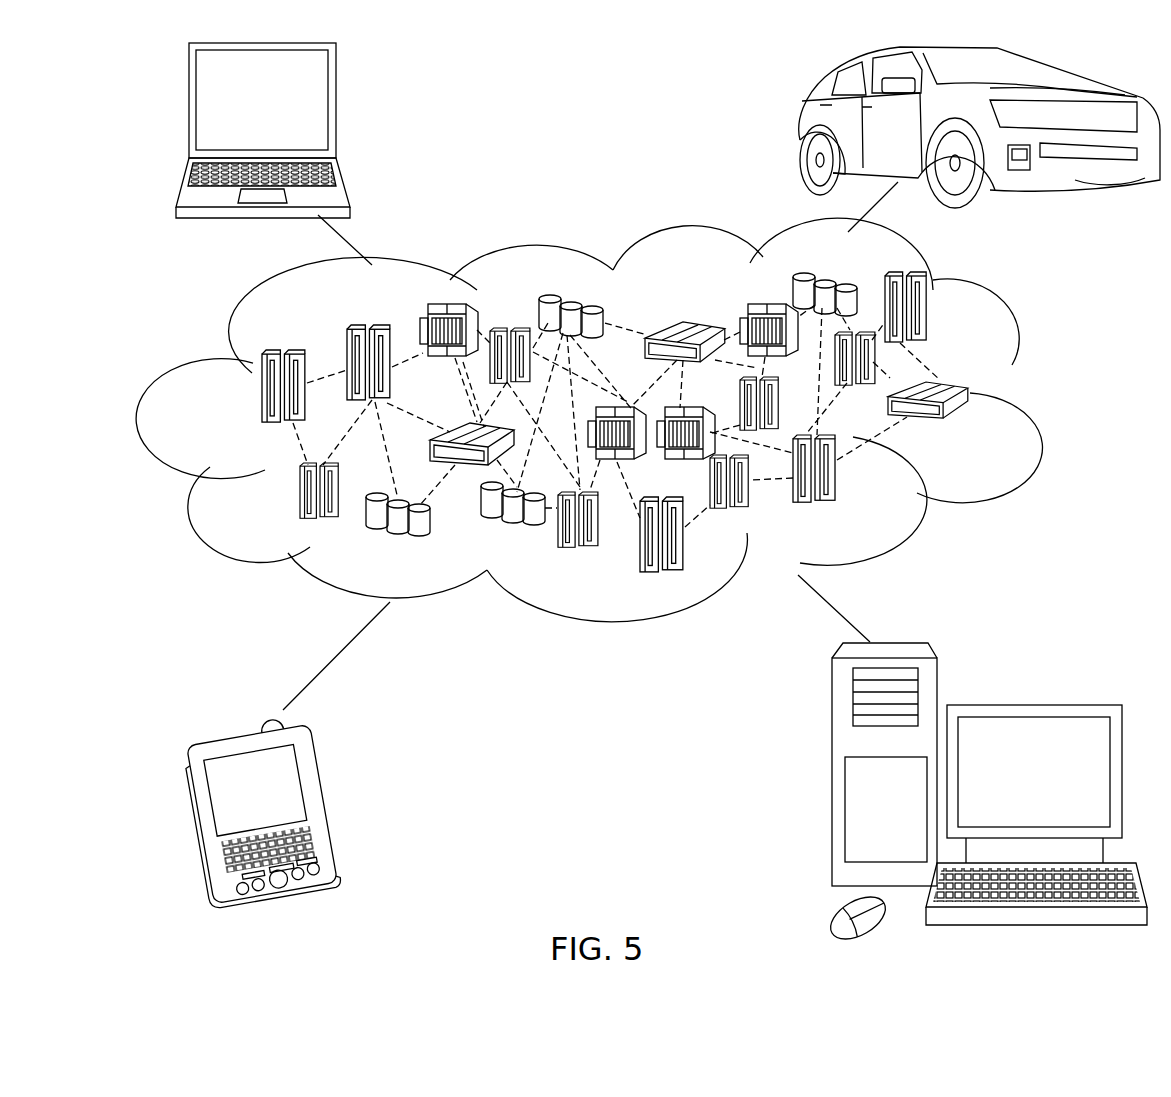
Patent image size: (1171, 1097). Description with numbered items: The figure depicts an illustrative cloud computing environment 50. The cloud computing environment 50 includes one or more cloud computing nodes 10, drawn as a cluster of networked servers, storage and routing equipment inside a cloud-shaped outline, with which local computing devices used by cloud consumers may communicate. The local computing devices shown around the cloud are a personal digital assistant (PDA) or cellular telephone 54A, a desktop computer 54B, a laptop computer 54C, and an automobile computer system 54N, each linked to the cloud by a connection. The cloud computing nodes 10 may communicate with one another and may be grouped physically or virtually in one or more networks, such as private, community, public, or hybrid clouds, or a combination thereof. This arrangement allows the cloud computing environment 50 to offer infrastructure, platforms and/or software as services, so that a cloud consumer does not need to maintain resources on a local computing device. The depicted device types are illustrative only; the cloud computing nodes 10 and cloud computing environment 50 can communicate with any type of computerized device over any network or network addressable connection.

The cloud computing environment 50 is at (1028, 393).
The cloud computing node 10 is at (965, 426).
The personal digital assistant (PDA) or cellular telephone 54A is at (322, 804).
The desktop computer 54B is at (1031, 704).
The laptop computer 54C is at (336, 108).
The automobile computer system 54N is at (800, 124).